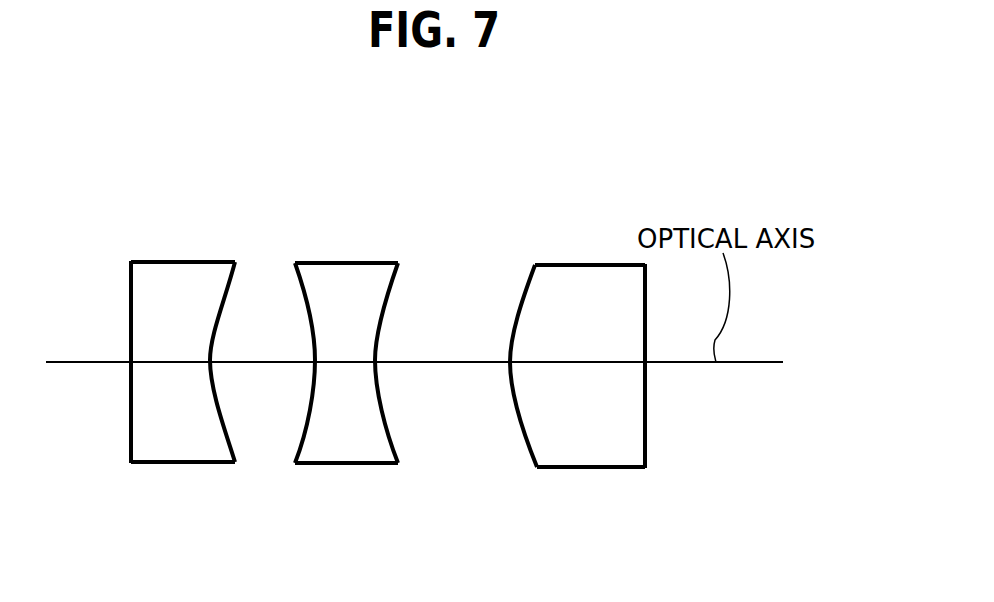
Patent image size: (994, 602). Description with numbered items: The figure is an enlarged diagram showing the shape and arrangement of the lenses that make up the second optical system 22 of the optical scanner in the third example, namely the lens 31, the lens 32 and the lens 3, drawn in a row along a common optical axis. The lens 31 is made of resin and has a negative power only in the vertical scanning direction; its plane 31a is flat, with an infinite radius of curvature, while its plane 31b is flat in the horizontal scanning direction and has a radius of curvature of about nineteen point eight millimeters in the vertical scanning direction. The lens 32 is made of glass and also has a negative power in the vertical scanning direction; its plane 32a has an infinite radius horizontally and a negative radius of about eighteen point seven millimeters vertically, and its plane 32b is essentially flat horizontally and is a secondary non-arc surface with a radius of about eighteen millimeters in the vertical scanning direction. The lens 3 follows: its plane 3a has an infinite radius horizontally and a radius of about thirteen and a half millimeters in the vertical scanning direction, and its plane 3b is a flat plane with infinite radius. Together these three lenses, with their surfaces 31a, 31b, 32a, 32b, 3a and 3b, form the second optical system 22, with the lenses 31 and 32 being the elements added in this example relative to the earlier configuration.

The second optical system 22 is at (648, 188).
The lens 31 is at (178, 272).
The plane of lens 31 31a is at (130, 443).
The plane of lens 31 31b is at (234, 443).
The lens 32 is at (348, 272).
The plane of lens 32 32a is at (300, 443).
The plane of lens 32 32b is at (392, 443).
The lens 3 is at (585, 275).
The plane of lens 3 3a is at (525, 443).
The plane of lens 3 3b is at (645, 443).